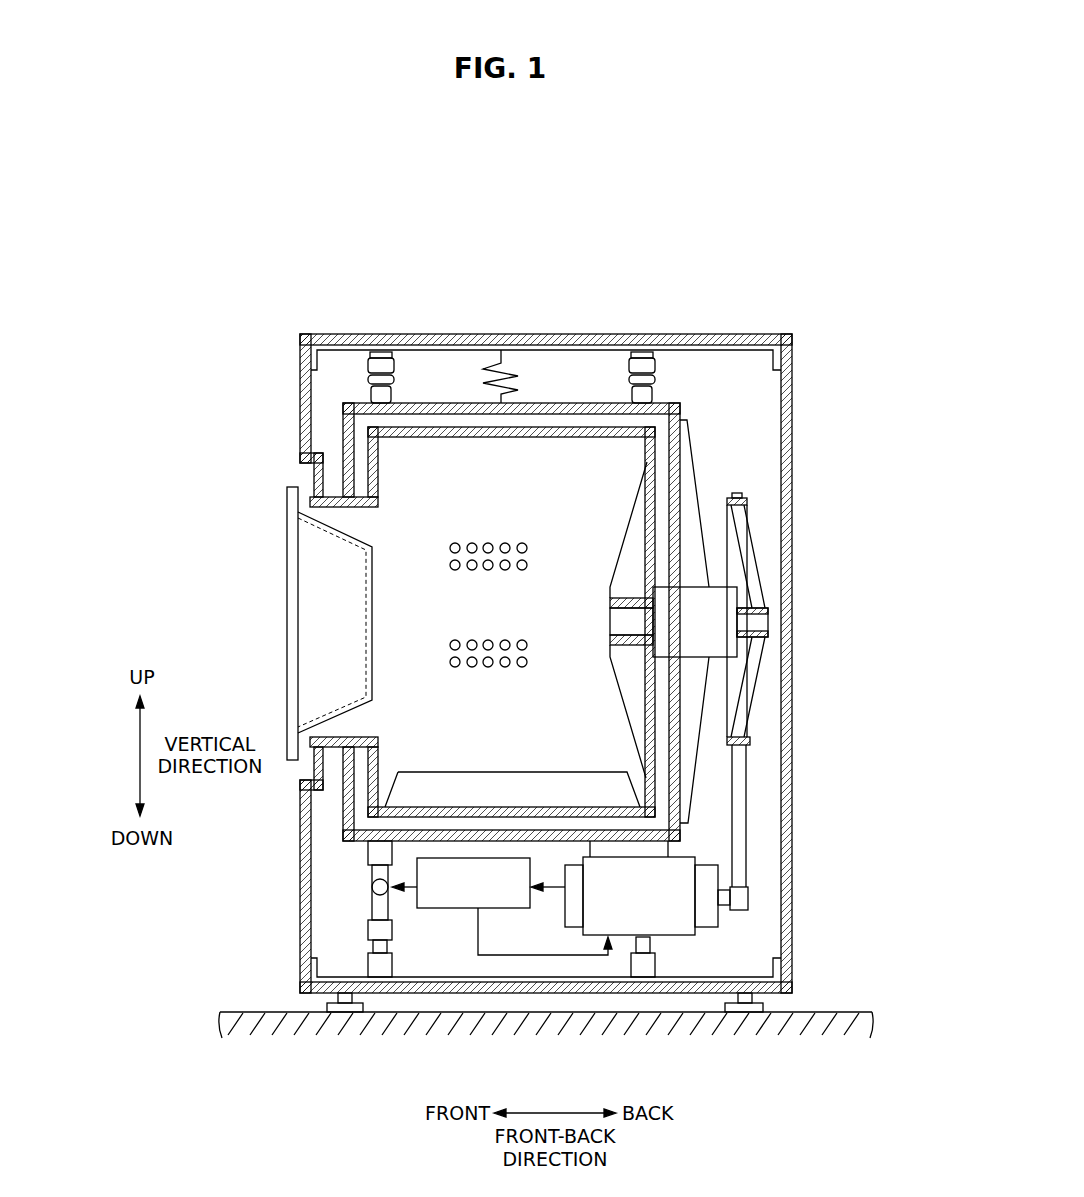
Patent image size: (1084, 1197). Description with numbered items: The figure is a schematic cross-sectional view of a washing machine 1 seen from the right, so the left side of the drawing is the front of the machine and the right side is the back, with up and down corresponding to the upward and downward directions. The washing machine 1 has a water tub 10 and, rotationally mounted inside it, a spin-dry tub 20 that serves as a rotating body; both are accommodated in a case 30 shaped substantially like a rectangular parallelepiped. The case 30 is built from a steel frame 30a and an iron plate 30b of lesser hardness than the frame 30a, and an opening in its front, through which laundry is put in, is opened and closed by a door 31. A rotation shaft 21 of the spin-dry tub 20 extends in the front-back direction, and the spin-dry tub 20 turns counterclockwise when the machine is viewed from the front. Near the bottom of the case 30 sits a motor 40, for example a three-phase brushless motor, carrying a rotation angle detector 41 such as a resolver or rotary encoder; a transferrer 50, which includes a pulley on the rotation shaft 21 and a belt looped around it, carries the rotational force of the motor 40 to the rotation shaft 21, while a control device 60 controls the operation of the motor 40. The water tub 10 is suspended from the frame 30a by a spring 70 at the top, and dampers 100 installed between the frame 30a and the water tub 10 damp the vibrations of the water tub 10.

The washing machine 1 is at (832, 227).
The water tub 10 is at (443, 403).
The spin-dry tub 20 is at (563, 427).
The rotation shaft 21 is at (628, 598).
The case 30 is at (772, 319).
The frame 30a is at (740, 344).
The iron plate 30b is at (690, 334).
The door 31 is at (287, 550).
The motor 40 is at (673, 937).
The rotation angle detector 41 is at (575, 928).
The transferrer 50 is at (757, 735).
The control device 60 is at (450, 909).
The spring 70 is at (490, 403).
The damper 100 is at (400, 356).